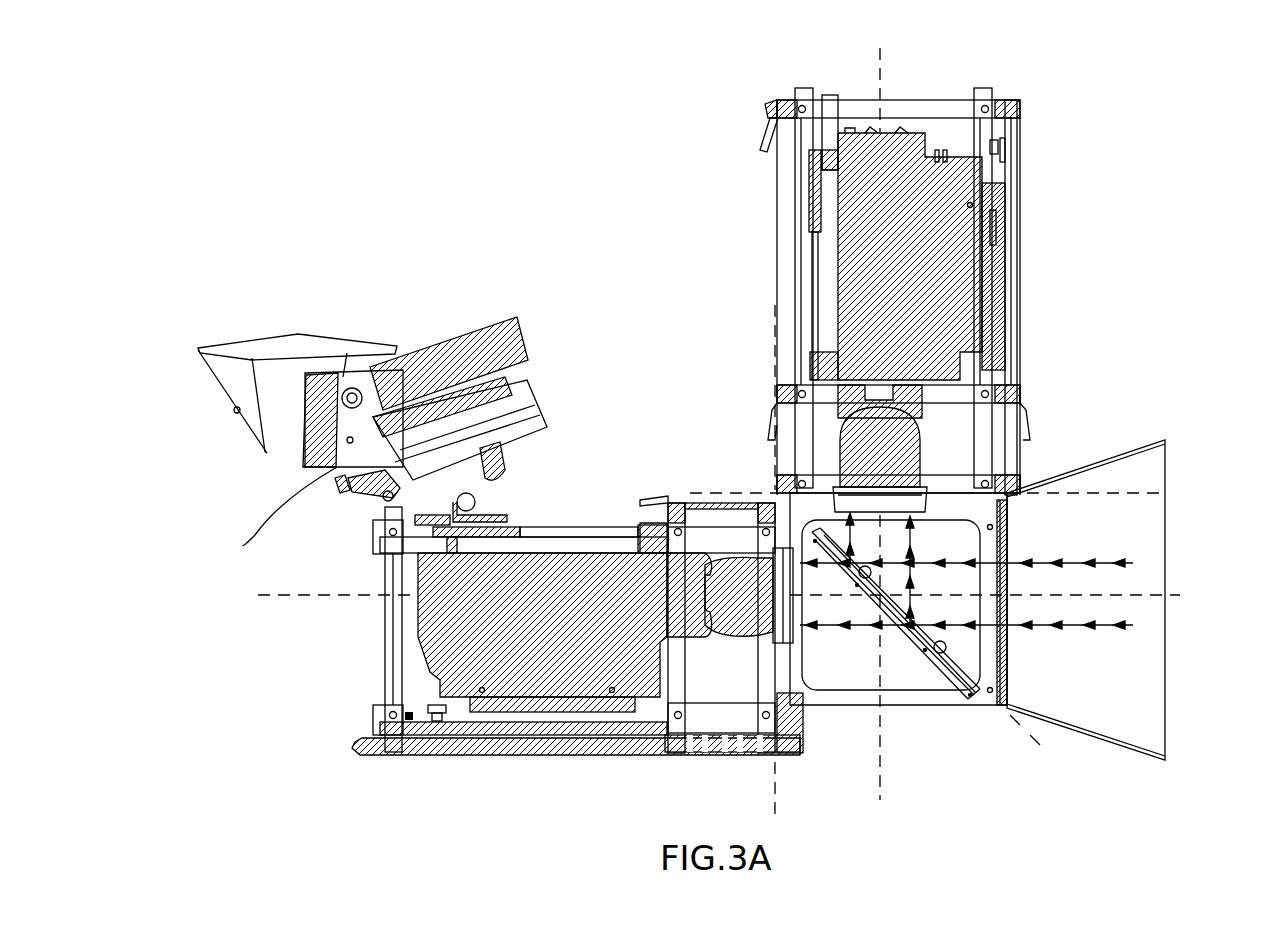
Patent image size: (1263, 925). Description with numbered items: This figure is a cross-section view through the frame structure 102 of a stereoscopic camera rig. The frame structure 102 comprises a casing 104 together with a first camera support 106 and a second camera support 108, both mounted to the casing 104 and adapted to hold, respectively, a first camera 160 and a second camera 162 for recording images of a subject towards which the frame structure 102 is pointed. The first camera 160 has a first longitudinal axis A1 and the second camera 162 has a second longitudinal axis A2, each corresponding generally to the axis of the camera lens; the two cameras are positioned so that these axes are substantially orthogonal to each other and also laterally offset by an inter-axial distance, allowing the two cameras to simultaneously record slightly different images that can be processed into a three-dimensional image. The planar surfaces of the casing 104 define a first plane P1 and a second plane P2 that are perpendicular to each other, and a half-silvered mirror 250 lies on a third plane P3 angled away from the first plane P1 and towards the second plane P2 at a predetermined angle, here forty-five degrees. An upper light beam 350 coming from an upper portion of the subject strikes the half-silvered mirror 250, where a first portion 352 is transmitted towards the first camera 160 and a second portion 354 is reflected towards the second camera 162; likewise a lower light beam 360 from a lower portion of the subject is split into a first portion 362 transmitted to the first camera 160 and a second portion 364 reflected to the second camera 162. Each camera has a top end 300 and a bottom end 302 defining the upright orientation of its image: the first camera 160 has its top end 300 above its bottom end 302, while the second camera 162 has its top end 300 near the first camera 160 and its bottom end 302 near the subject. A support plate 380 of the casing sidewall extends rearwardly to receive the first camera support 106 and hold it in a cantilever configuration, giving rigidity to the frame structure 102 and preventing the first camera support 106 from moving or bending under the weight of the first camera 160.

The frame structure 102 is at (570, 235).
The casing 104 is at (1020, 490).
The first camera support 106 is at (350, 755).
The second camera support 108 is at (762, 98).
The first camera 160 is at (450, 650).
The second camera 162 is at (960, 200).
The half-silvered mirror 250 is at (947, 660).
The top end 300 is at (850, 183).
The bottom end 302 is at (982, 262).
The upper light beam 350 is at (1133, 563).
The first portion of the upper light beam 352 is at (823, 563).
The second portion of the upper light beam 354 is at (850, 535).
The lower light beam 360 is at (1133, 625).
The first portion of the lower light beam 362 is at (820, 627).
The second portion of the lower light beam 364 is at (912, 536).
The support plate 380 is at (697, 752).
The first longitudinal axis A1 is at (1188, 592).
The second longitudinal axis A2 is at (882, 762).
The first plane P1 is at (1140, 493).
The second plane P2 is at (775, 790).
The third plane P3 is at (748, 460).